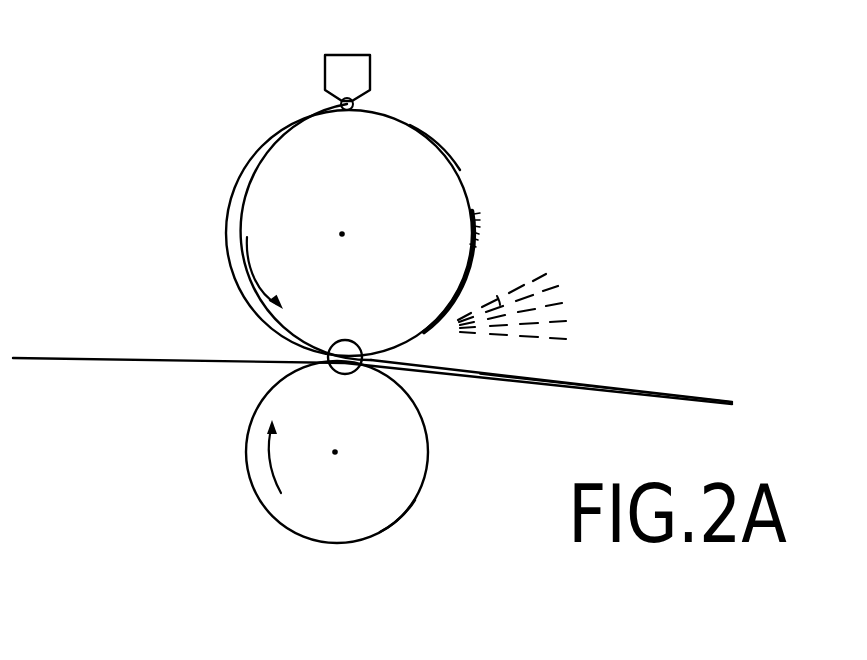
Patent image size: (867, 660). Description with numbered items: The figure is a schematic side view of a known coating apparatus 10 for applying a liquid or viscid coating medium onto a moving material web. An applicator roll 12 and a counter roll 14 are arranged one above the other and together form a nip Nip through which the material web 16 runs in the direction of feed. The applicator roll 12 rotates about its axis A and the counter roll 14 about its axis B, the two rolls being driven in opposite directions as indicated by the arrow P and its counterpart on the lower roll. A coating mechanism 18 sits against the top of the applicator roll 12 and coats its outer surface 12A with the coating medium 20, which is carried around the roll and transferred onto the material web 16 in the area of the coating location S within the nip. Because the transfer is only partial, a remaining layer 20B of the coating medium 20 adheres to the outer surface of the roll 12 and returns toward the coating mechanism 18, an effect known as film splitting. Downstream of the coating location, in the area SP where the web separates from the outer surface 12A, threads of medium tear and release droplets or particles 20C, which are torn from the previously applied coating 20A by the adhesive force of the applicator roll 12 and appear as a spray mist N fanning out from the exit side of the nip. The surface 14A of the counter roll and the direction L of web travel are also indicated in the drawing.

The coating apparatus 10 is at (630, 124).
The applicator roll 12 is at (282, 145).
The outer surface 12A is at (438, 133).
The counter roll 14 is at (345, 523).
The second roll surface 14A is at (395, 523).
The material web 16 is at (125, 360).
The coating mechanism 18 is at (367, 68).
The coating medium 20 is at (222, 238).
The previously applied coating 20A is at (585, 380).
The remaining layer of coating medium 20B is at (474, 246).
The droplets or particles 20C is at (497, 296).
The spray mist N is at (540, 308).
The coating location S is at (348, 340).
The area Sp SP is at (430, 348).
The axis A is at (344, 232).
The axis B is at (338, 452).
The arrow P is at (277, 241).
The web travel direction L is at (706, 390).
The nip Nip is at (262, 342).